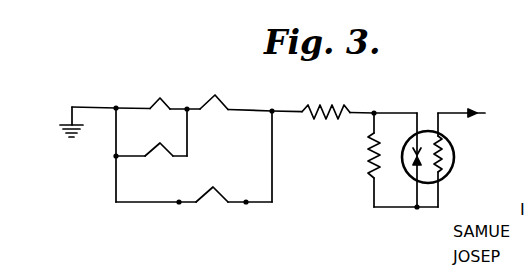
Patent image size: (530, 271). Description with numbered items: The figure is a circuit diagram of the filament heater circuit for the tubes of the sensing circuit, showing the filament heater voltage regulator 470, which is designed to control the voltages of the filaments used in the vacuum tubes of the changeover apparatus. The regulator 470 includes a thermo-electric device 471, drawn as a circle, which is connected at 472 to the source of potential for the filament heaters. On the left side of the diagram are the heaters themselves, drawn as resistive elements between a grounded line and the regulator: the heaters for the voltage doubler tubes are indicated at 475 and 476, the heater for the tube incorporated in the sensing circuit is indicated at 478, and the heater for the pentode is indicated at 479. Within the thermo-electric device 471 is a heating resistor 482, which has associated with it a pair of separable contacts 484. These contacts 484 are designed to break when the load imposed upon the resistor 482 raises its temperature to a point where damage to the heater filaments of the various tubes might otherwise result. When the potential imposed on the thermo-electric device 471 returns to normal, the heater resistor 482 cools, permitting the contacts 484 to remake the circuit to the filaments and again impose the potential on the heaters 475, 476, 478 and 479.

The filament heater voltage regulator 470 is at (396, 220).
The thermo-electric device 471 is at (458, 167).
The connection to source of potential 472 is at (474, 110).
The heater for voltage doubler tube 475 is at (155, 104).
The heater for voltage doubler tube 476 is at (163, 150).
The heater for sensing circuit tube 478 is at (222, 102).
The heater for pentode 479 is at (217, 195).
The heating resistor 482 is at (450, 142).
The separable contacts 484 is at (413, 150).